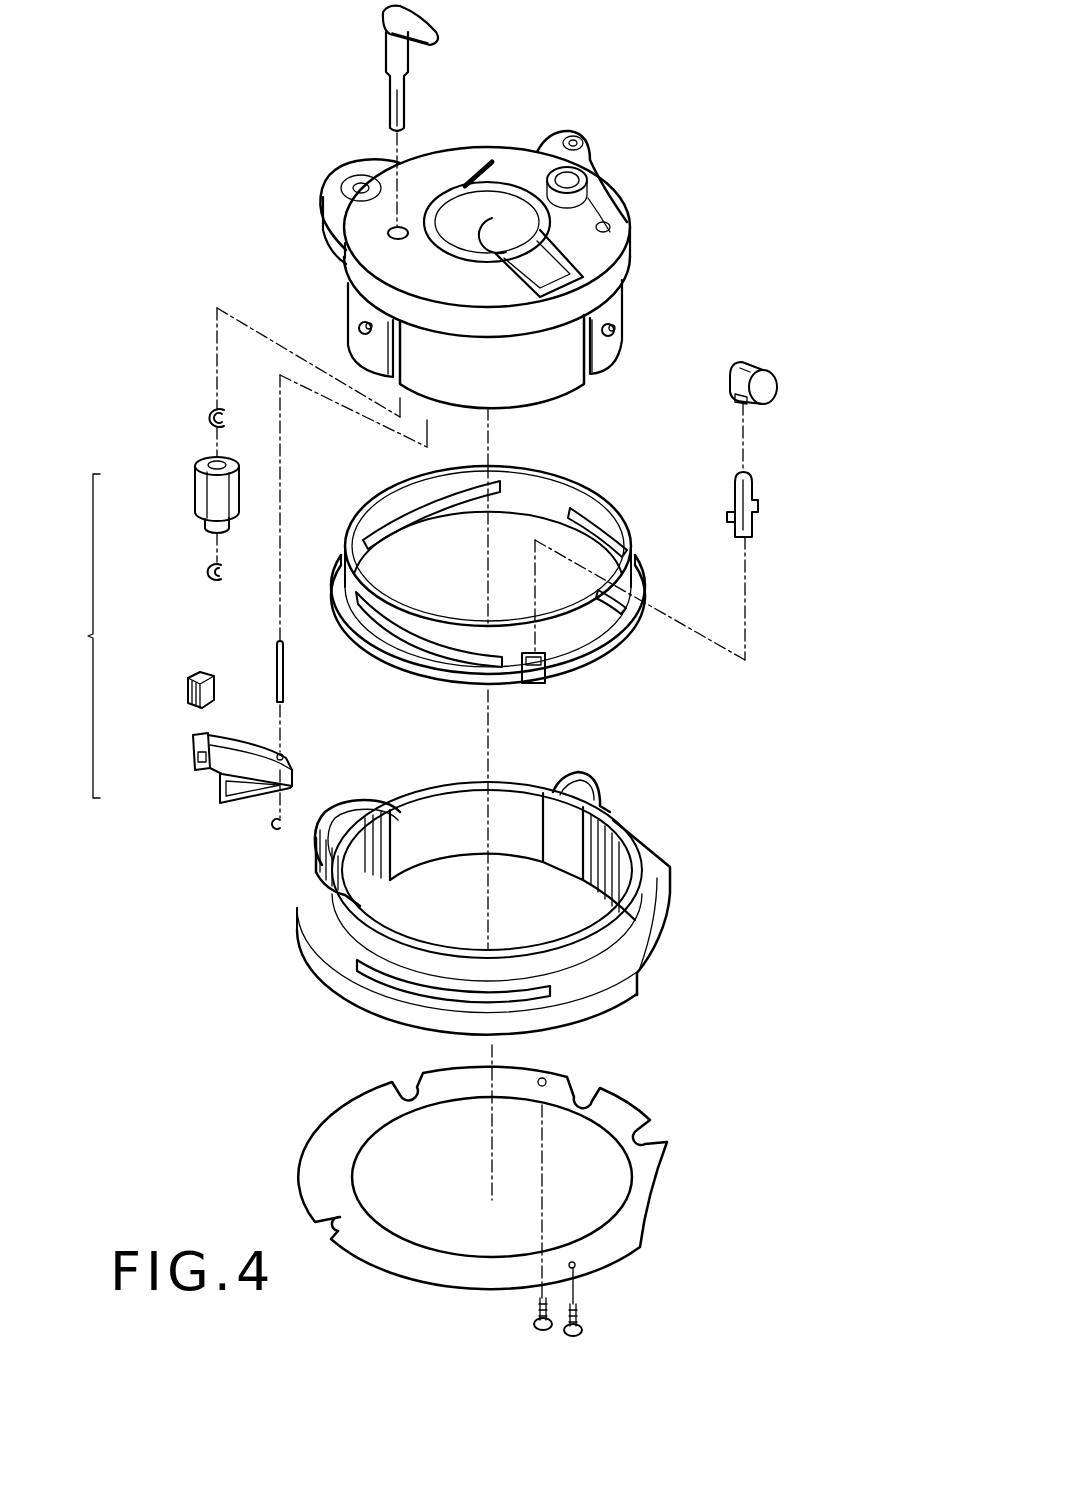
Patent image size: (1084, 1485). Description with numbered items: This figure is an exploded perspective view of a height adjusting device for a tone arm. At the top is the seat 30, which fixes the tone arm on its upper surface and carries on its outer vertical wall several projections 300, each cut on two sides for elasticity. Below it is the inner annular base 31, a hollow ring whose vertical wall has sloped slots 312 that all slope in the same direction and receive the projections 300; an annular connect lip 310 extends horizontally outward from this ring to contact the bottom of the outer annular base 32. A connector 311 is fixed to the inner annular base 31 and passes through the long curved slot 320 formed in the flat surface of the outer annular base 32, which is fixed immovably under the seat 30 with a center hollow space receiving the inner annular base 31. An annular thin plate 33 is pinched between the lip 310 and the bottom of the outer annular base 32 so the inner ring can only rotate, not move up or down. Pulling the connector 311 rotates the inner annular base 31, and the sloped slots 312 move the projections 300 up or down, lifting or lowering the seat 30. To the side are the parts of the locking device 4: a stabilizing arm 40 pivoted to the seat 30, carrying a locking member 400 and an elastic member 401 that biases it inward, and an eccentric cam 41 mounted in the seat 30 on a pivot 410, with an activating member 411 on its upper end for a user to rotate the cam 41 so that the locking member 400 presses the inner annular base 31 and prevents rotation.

The locking device 4 is at (175, 649).
The seat 30 is at (513, 160).
The projections 300 is at (350, 328).
The inner annular base 31 is at (511, 574).
The annular connect lip 310 is at (597, 650).
The connector 311 is at (763, 390).
The sloped slots 312 is at (410, 513).
The outer annular base 32 is at (515, 906).
The long curved slot 320 is at (387, 980).
The annular thin plate 33 is at (643, 1177).
The stabilizing arm 40 is at (205, 782).
The locking member 400 is at (188, 693).
The elastic member 401 is at (235, 815).
The eccentric cam 41 is at (195, 493).
The pivot 410 is at (392, 100).
The activating member 411 is at (392, 43).